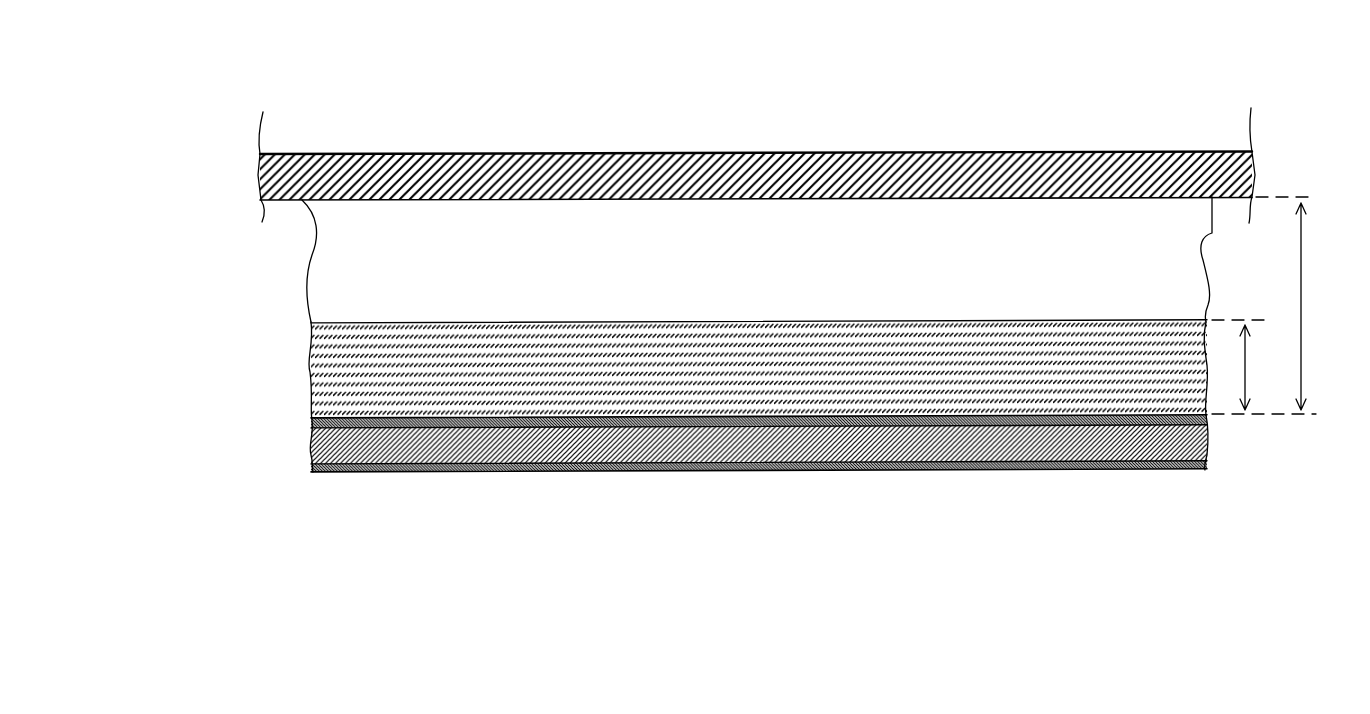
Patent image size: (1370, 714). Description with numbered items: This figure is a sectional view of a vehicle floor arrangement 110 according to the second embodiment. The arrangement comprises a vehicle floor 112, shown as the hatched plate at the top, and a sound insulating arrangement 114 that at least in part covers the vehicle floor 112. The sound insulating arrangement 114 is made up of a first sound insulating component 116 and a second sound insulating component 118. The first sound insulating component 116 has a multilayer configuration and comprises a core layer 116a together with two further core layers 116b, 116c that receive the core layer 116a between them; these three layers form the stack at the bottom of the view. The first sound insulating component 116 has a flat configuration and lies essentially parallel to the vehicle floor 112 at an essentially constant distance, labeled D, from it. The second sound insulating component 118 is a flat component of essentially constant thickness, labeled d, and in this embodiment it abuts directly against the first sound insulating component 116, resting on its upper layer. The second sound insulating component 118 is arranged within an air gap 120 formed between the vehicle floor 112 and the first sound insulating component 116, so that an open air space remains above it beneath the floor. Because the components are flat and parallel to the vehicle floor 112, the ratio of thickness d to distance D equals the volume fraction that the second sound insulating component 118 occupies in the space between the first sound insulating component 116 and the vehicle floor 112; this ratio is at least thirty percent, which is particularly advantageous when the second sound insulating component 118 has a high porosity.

The vehicle floor arrangement 110 is at (226, 39).
The vehicle floor 112 is at (324, 155).
The sound insulating arrangement 114 is at (226, 272).
The first sound insulating component 116 is at (382, 492).
The core layer 116a is at (312, 443).
The core layer 116b is at (317, 474).
The core layer 116c is at (312, 419).
The second sound insulating component 118 is at (311, 354).
The air gap 120 is at (317, 289).